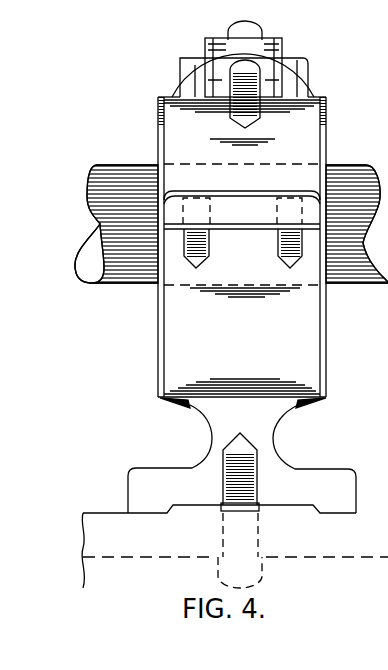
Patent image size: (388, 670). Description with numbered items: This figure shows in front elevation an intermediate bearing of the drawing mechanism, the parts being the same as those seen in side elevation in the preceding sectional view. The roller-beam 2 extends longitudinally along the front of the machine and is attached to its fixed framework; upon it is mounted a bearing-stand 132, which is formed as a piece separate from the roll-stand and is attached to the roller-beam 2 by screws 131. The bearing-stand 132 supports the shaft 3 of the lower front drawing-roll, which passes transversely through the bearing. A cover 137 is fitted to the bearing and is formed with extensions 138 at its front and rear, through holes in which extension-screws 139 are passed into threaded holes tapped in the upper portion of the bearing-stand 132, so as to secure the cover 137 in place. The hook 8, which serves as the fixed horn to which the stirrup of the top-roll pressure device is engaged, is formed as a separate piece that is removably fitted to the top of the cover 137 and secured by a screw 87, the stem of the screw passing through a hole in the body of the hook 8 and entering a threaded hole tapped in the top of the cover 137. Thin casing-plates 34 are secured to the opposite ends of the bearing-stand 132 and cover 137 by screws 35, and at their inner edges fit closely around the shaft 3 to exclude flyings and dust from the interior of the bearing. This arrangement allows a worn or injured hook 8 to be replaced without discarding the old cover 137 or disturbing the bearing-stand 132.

The roller-beam 2 is at (110, 512).
The shaft of the lower front drawing-roll 3 is at (97, 202).
The hook 8 is at (213, 60).
The casing-plates 34 is at (158, 357).
The screws 35 is at (160, 105).
The screw 87 is at (240, 31).
The screws 131 is at (217, 567).
The bearing-stand 132 is at (222, 422).
The cover 137 is at (170, 138).
The extensions 138 is at (295, 190).
The extension-screws 139 is at (185, 256).